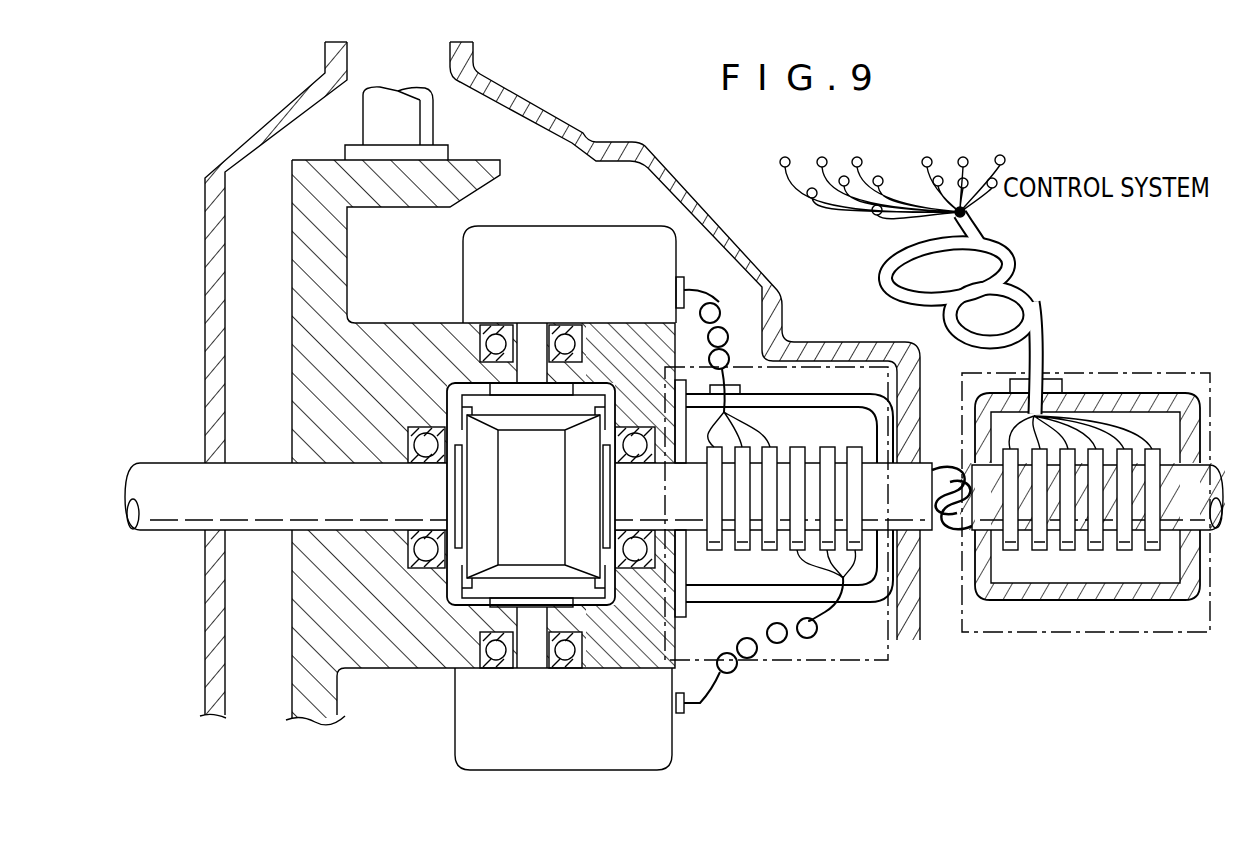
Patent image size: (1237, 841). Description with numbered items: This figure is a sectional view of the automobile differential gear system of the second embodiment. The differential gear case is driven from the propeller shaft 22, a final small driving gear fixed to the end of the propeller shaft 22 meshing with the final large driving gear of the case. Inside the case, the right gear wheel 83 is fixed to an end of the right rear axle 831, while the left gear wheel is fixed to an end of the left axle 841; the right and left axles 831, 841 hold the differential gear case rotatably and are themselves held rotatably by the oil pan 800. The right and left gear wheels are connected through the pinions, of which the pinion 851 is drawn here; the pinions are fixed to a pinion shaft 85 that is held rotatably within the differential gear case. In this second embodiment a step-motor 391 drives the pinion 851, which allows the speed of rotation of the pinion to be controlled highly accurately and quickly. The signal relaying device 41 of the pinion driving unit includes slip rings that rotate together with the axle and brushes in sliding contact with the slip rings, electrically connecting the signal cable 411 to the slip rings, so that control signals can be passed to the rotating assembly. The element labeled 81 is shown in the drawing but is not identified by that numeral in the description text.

The propeller shaft 22 is at (417, 118).
The bearing housing 81 is at (503, 165).
The step-motor 391 is at (520, 243).
The pinion 851 is at (575, 413).
The left axle 841 is at (167, 475).
The oil pan 800 is at (205, 577).
The right rear axle 831 is at (893, 607).
The right gear wheel 83 is at (712, 660).
The pinion shaft 85 is at (593, 536).
The signal cable 411 is at (1047, 317).
The signal relaying device 41 is at (1155, 634).